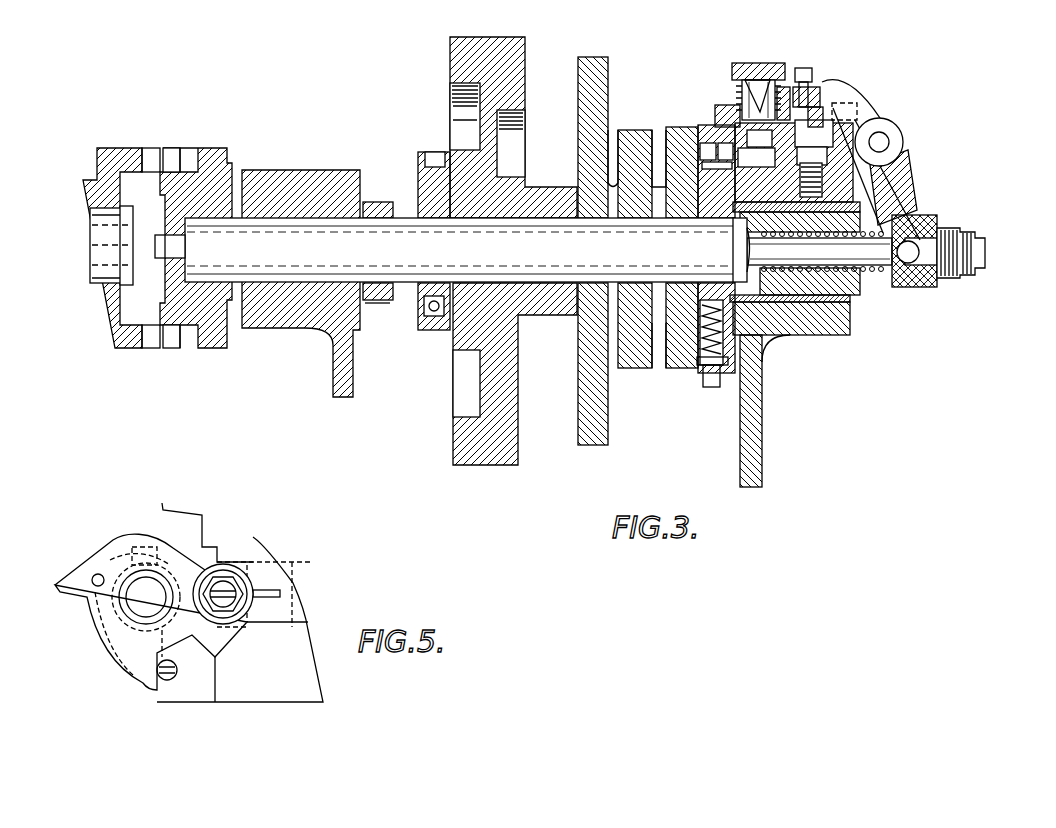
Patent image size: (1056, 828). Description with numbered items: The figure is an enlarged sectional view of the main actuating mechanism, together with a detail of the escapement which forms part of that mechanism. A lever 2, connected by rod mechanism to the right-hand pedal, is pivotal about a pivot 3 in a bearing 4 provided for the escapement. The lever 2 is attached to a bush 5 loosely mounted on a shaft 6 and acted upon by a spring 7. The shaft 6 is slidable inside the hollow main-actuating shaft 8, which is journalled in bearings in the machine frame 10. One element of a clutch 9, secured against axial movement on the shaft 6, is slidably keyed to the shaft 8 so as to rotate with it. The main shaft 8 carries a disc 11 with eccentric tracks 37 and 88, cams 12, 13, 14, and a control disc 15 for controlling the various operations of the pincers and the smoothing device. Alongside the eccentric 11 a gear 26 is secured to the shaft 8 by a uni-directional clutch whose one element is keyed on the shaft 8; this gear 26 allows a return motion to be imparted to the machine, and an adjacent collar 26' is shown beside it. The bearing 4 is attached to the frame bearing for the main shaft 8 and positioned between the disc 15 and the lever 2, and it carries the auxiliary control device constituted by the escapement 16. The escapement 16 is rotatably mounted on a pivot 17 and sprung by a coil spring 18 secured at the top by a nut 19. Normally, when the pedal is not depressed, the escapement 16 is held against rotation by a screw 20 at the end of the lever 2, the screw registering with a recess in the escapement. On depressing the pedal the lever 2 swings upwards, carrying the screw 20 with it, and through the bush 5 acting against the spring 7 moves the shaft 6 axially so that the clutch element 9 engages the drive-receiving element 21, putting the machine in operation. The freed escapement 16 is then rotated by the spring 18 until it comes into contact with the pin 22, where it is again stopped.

In FIG. 3, the lever 2 is at (870, 108).
In FIG. 3, the pivot 3 is at (882, 140).
In FIG. 3, the bearing 4 is at (860, 165).
In FIG. 3, the bush 5 is at (938, 225).
In FIG. 3, the shaft 6 is at (986, 250).
In FIG. 3, the spring 7 is at (867, 280).
In FIG. 3, the hollow main-actuating shaft 8 is at (790, 335).
In FIG. 3, the clutch element 9 is at (194, 155).
In FIG. 3, the machine frame 10 is at (340, 372).
In FIG. 3, the disc 11 is at (468, 42).
In FIG. 3, the cam 12 is at (582, 62).
In FIG. 3, the cam 13 is at (638, 135).
In FIG. 3, the cam 14 is at (683, 130).
In FIG. 3, the control disc 15 is at (730, 345).
In FIG. 3, the escapement 16 is at (722, 108).
In FIG. 5, the escapement 16 is at (88, 653).
In FIG. 3, the pivot 17 is at (767, 110).
In FIG. 5, the pivot 17 is at (147, 593).
In FIG. 3, the coil spring 18 is at (785, 95).
In FIG. 3, the nut 19 is at (775, 82).
In FIG. 3, the screw 20 is at (812, 75).
In FIG. 5, the screw 20 is at (218, 582).
In FIG. 3, the drive-receiving clutch element 21 is at (97, 175).
In FIG. 5, the pin 22 is at (163, 683).
In FIG. 3, the gear 26 is at (416, 230).
In FIG. 3, the collar 26' is at (380, 264).
In FIG. 3, the eccentric track 37 is at (466, 118).
In FIG. 3, the eccentric track 88 is at (510, 145).